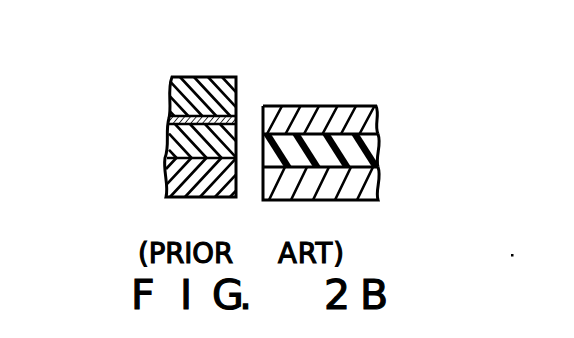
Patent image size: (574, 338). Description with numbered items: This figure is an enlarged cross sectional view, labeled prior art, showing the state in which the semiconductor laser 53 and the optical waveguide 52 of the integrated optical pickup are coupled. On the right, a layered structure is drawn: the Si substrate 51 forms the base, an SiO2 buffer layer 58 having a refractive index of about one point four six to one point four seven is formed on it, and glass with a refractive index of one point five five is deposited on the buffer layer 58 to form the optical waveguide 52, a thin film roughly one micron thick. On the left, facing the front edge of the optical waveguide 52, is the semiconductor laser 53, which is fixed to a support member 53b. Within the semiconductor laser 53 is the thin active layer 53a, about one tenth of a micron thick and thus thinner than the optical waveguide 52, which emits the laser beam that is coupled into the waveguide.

The semiconductor laser 53 is at (146, 105).
The active layer 53a is at (172, 120).
The support member 53b is at (172, 181).
The optical waveguide 52 is at (378, 122).
The SiO2 buffer layer 58 is at (378, 143).
The Si substrate 51 is at (378, 183).